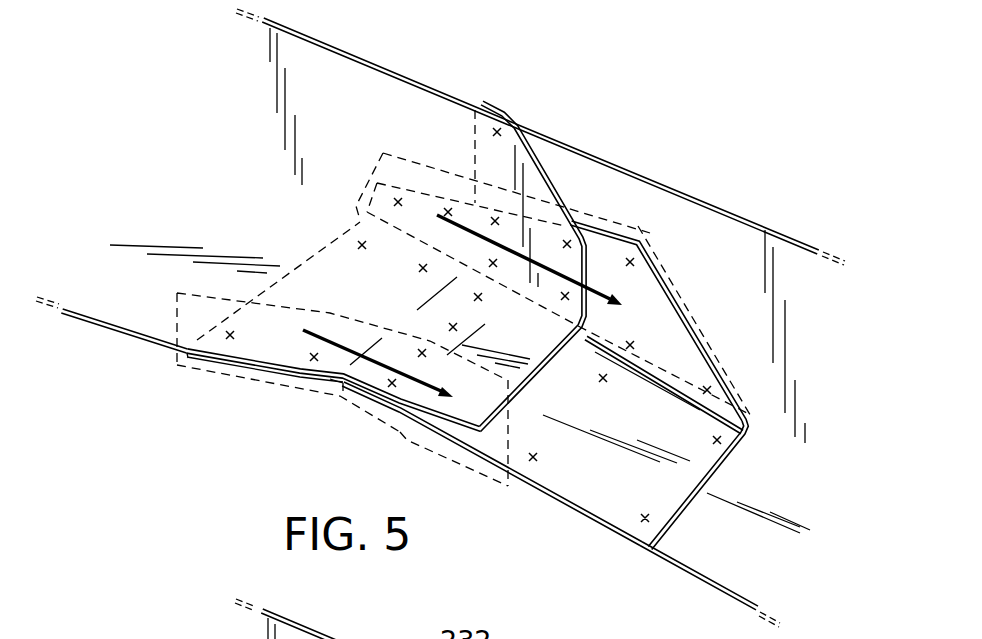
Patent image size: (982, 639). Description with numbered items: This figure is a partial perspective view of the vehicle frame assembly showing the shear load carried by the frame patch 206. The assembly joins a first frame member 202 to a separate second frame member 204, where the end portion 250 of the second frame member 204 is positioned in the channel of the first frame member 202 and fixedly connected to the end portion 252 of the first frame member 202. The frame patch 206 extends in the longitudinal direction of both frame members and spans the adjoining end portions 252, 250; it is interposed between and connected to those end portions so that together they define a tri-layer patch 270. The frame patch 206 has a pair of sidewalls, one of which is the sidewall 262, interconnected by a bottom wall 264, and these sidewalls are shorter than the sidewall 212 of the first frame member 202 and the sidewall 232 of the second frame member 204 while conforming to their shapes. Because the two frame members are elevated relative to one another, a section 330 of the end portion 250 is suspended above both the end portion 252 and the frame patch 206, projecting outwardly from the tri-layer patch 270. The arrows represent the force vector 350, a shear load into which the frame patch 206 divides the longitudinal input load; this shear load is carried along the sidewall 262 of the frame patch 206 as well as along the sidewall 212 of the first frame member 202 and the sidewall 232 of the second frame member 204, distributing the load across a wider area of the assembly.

The first frame member 202 is at (684, 560).
The second frame member 204 is at (114, 322).
The frame patch 206 is at (596, 498).
The sidewall 212 is at (724, 224).
The sidewall 232 is at (357, 76).
The end portion 250 is at (332, 364).
The end portion 252 is at (478, 463).
The sidewall 262 is at (681, 340).
The bottom wall 264 is at (700, 452).
The tri-layer patch 270 is at (366, 406).
The section 330 is at (533, 342).
The force vector 350 is at (596, 302).